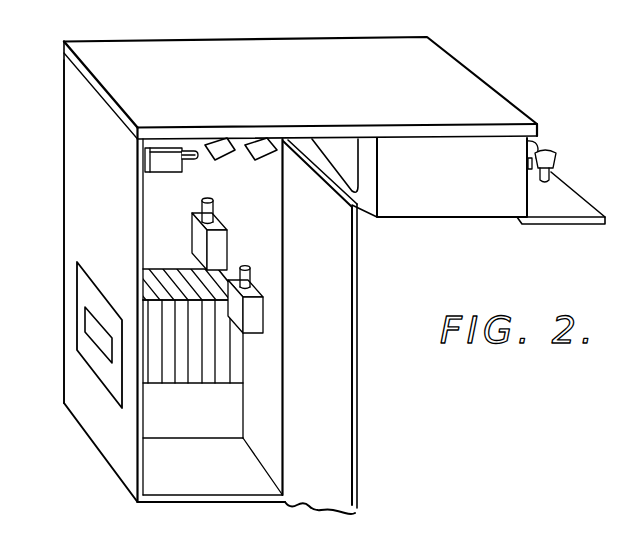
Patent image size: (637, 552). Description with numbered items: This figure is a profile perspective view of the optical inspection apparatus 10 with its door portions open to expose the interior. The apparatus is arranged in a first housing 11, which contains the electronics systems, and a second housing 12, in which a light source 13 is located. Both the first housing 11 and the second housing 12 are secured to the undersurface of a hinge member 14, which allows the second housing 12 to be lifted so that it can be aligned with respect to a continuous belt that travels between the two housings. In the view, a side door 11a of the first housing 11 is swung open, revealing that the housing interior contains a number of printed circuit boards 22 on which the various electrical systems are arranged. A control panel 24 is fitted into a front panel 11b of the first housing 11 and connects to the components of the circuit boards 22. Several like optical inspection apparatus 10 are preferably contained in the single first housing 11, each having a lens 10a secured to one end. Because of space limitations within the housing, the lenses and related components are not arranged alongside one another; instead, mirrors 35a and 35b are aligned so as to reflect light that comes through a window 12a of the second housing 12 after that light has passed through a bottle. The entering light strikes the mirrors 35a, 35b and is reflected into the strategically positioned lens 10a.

The optical inspection apparatus 10 is at (50, 100).
The lens 10a is at (244, 268).
The first housing 11 is at (92, 221).
The side door 11a is at (335, 328).
The front panel 11b is at (89, 231).
The second housing 12 is at (464, 181).
The window 12a is at (338, 148).
The light source 13 is at (538, 147).
The hinge member 14 is at (267, 82).
The printed circuit boards 22 is at (204, 369).
The control panel 24 is at (90, 322).
The mirror 35a is at (219, 143).
The mirror 35b is at (265, 143).